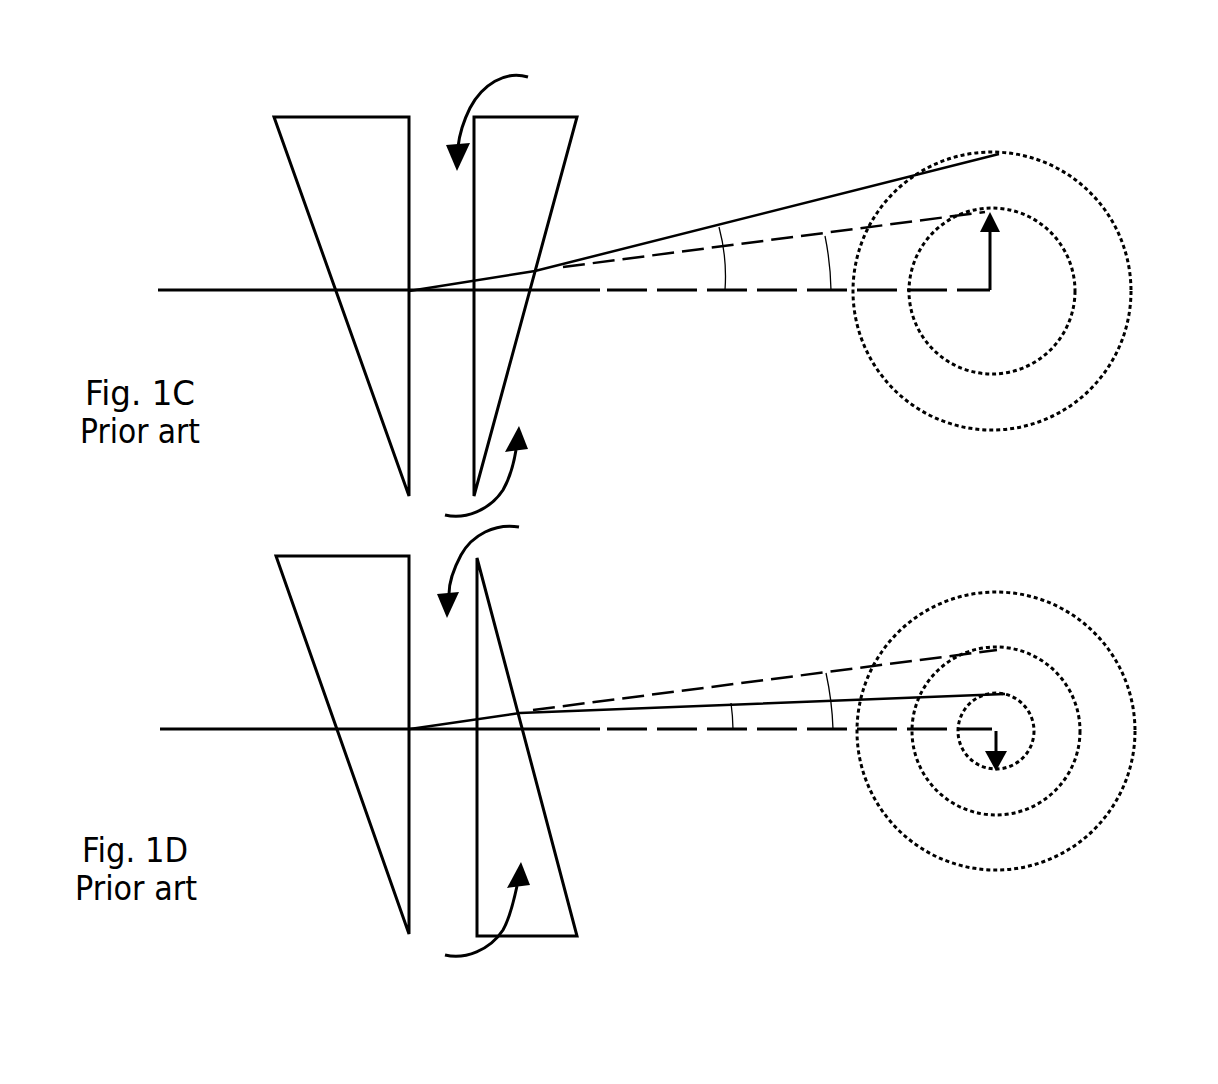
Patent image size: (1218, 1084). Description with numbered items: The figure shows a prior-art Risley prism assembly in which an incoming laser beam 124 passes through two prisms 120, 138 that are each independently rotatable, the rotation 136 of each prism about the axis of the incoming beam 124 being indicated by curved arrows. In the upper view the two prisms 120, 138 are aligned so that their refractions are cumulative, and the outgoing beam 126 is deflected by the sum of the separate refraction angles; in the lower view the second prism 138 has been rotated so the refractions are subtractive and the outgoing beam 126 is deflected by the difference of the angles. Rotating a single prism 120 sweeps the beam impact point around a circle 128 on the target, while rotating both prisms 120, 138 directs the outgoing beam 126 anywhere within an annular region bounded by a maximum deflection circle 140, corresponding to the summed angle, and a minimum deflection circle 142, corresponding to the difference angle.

In FIG. 1C, the prism 120 is at (284, 147).
In FIG. 1D, the prism 120 is at (292, 608).
In FIG. 1C, the incoming laser beam 124 is at (222, 288).
In FIG. 1D, the incoming laser beam 124 is at (233, 725).
In FIG. 1C, the outgoing beam 126 is at (777, 207).
In FIG. 1D, the outgoing beam 126 is at (749, 705).
In FIG. 1C, the circle 128 is at (959, 366).
In FIG. 1D, the circle 128 is at (1070, 692).
In FIG. 1C, the rotating 136 is at (475, 93).
In FIG. 1D, the rotating 136 is at (484, 520).
In FIG. 1C, the second prism 138 is at (570, 152).
In FIG. 1D, the second prism 138 is at (498, 627).
In FIG. 1C, the maximum deflection circle 140 is at (1045, 166).
In FIG. 1D, the maximum deflection circle 140 is at (1049, 605).
In FIG. 1D, the minimum deflection circle 142 is at (1028, 755).